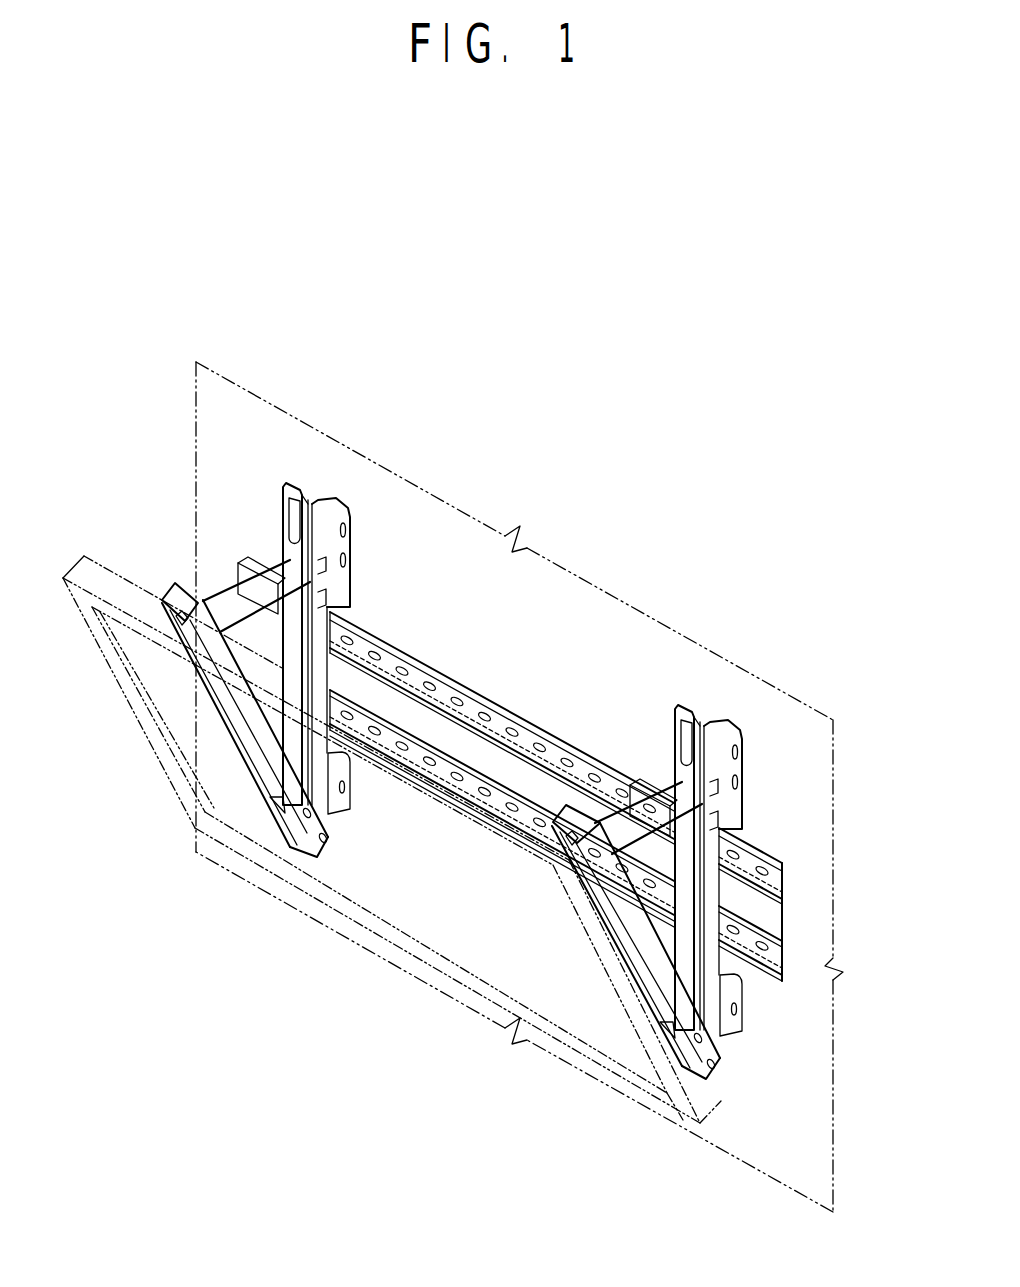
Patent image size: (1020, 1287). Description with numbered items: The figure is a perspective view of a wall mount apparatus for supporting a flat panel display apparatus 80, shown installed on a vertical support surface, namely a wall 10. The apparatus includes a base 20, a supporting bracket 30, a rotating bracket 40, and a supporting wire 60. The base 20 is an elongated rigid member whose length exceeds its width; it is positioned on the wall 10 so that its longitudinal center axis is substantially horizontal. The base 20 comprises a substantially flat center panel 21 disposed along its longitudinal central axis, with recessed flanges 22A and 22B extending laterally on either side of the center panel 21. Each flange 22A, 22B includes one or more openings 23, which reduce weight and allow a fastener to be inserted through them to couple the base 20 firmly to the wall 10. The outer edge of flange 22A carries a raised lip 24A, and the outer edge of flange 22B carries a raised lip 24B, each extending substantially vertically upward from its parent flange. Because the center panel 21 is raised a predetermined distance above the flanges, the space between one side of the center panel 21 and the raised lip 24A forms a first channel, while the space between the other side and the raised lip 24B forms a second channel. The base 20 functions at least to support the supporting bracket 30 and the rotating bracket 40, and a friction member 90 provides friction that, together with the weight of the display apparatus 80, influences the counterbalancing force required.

The wall 10 is at (583, 593).
The base 20 is at (620, 803).
The center panel 21 is at (784, 916).
The recessed flange 22A is at (784, 877).
The recessed flange 22B is at (784, 952).
The opening 23 is at (570, 758).
The raised lip 24A is at (505, 710).
The raised lip 24B is at (784, 978).
The supporting bracket 30 is at (283, 488).
The rotating bracket 40 is at (215, 722).
The supporting wire 60 is at (238, 563).
The flat panel display apparatus 80 is at (104, 668).
The friction member 90 is at (323, 788).